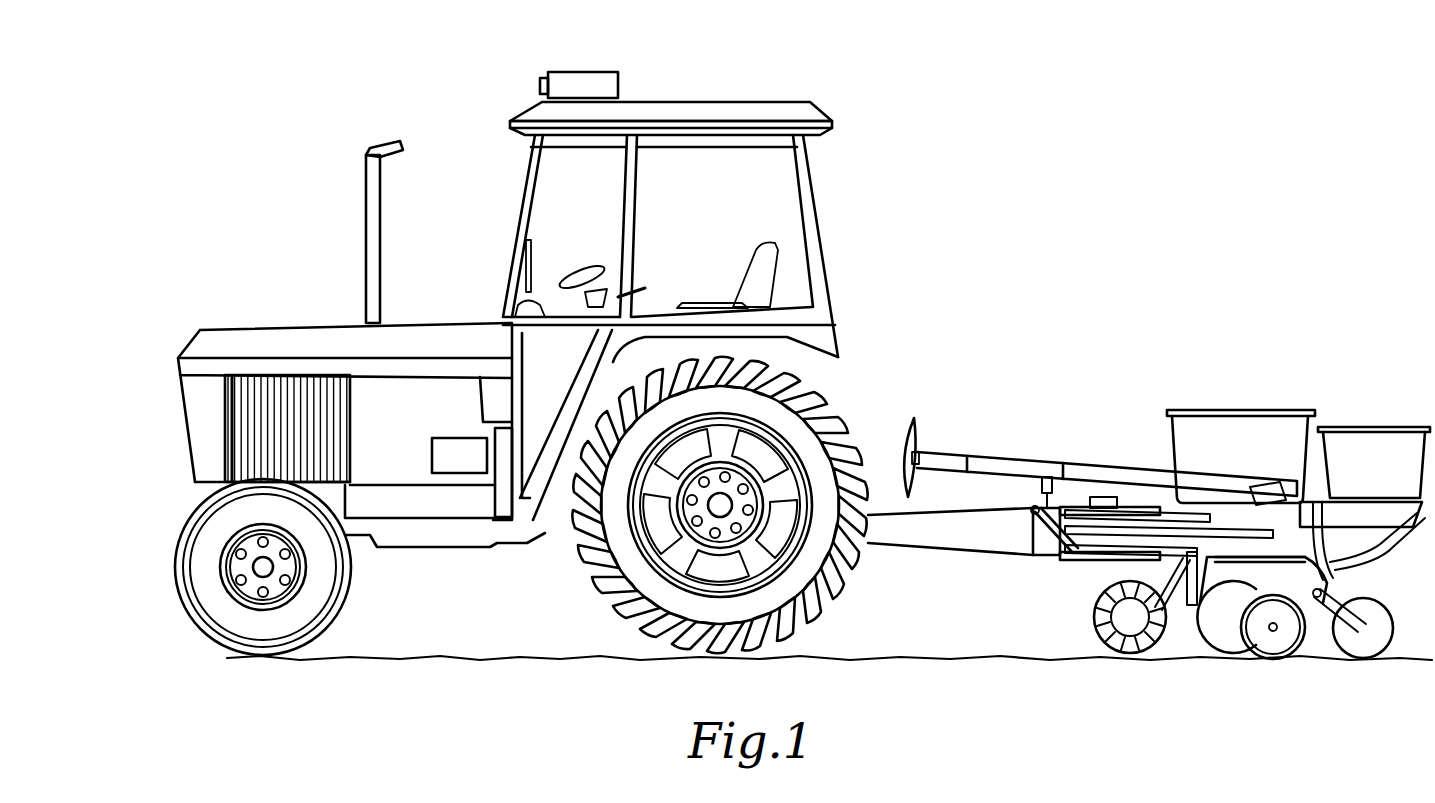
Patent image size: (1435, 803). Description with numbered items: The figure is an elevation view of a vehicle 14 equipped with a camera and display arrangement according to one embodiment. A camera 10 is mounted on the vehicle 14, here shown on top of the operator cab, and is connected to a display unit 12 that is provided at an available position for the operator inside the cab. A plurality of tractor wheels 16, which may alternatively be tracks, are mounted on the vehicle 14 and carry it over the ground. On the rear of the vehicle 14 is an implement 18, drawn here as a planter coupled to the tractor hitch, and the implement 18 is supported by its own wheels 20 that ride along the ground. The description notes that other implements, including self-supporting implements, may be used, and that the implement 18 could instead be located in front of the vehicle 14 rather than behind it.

The camera 10 is at (602, 72).
The display unit 12 is at (520, 247).
The vehicle 14 is at (232, 330).
The tractor wheels 16 is at (210, 632).
The implement 18 is at (1190, 408).
The wheels 20 is at (1273, 660).